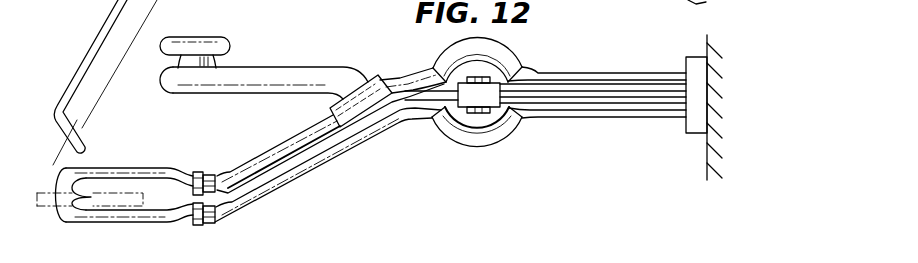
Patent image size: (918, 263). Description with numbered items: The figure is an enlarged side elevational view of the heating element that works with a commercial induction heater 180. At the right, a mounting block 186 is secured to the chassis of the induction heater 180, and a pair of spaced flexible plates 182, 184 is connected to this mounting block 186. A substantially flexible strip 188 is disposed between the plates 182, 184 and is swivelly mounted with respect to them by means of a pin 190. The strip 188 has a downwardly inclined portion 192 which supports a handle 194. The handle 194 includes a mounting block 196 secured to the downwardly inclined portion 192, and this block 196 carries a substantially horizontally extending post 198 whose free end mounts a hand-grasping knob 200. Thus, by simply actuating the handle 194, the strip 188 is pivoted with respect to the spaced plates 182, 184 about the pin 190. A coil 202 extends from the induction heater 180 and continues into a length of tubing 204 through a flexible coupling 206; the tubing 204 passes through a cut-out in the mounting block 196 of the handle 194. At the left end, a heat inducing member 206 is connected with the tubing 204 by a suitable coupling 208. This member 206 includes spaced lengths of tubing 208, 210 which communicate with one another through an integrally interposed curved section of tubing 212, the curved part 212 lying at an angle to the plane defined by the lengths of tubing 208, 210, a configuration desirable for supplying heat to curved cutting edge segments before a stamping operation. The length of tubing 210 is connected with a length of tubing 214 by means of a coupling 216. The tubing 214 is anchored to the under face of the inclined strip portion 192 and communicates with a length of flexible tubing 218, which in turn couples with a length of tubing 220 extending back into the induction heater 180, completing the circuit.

The induction heater 180 is at (706, 0).
The flexible plate 182 is at (540, 88).
The flexible plate 184 is at (545, 104).
The mounting block 186 is at (700, 84).
The flexible strip 188 is at (427, 100).
The pin 190 is at (483, 113).
The downwardly inclined portion 192 is at (327, 137).
The handle 194 is at (319, 48).
The mounting block 196 is at (388, 96).
The post 198 is at (268, 58).
The hand-grasping knob 200 is at (220, 30).
The coil 202 is at (644, 73).
The length of tubing 204 is at (268, 152).
The heat inducing member 206 is at (92, 41).
The length of tubing 208 is at (180, 170).
The length of tubing 210 is at (128, 224).
The curved section of tubing 212 is at (62, 205).
The length of tubing 214 is at (290, 181).
The coupling 216 is at (205, 224).
The flexible tubing 218 is at (466, 140).
The length of tubing 220 is at (615, 118).